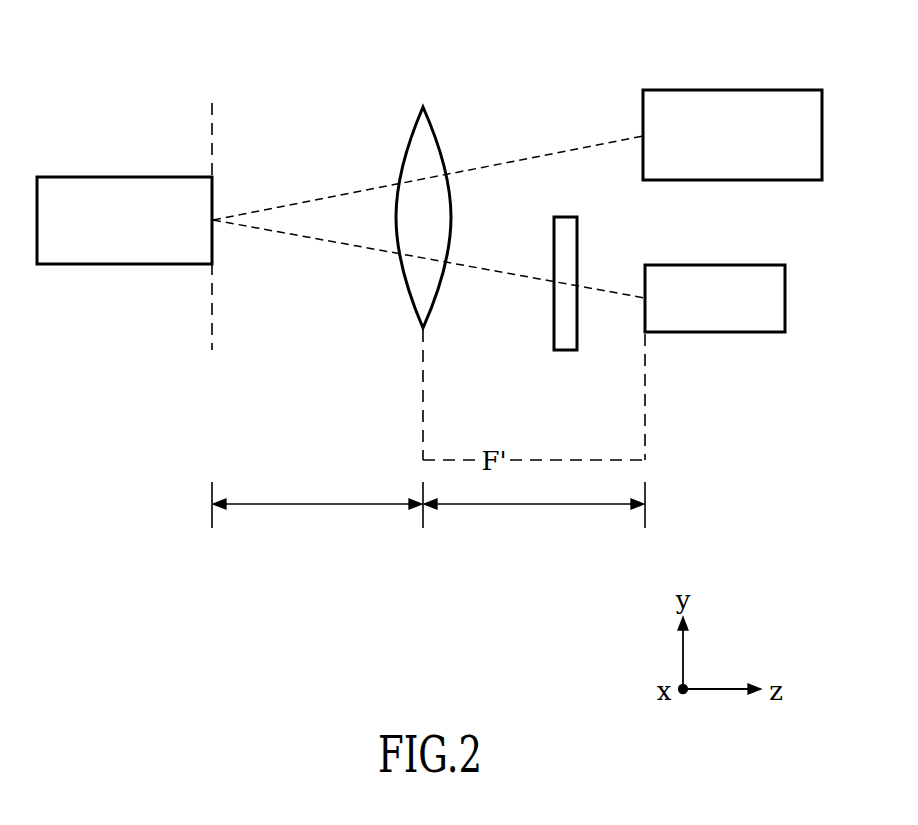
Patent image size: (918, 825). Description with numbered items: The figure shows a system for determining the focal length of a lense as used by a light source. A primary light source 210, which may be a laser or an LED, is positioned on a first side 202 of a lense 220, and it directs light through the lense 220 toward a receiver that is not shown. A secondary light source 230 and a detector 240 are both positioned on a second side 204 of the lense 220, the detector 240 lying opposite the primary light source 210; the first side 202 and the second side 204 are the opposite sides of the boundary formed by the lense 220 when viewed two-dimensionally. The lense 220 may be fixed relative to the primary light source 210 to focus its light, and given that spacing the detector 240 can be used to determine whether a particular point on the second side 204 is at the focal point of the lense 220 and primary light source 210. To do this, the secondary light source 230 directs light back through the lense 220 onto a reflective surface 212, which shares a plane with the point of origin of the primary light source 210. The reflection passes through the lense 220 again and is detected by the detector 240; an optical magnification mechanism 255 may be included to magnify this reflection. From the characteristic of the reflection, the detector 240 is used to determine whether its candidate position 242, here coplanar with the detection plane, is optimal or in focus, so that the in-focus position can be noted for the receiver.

The primary light source 210 is at (92, 265).
The reflective surface 212 is at (213, 218).
The lense 220 is at (410, 140).
The secondary light source 230 is at (760, 90).
The detector 240 is at (745, 333).
The candidate position 242 is at (645, 297).
The optical magnification mechanism 255 is at (566, 352).
The first side 202 is at (311, 506).
The second side 204 is at (531, 506).